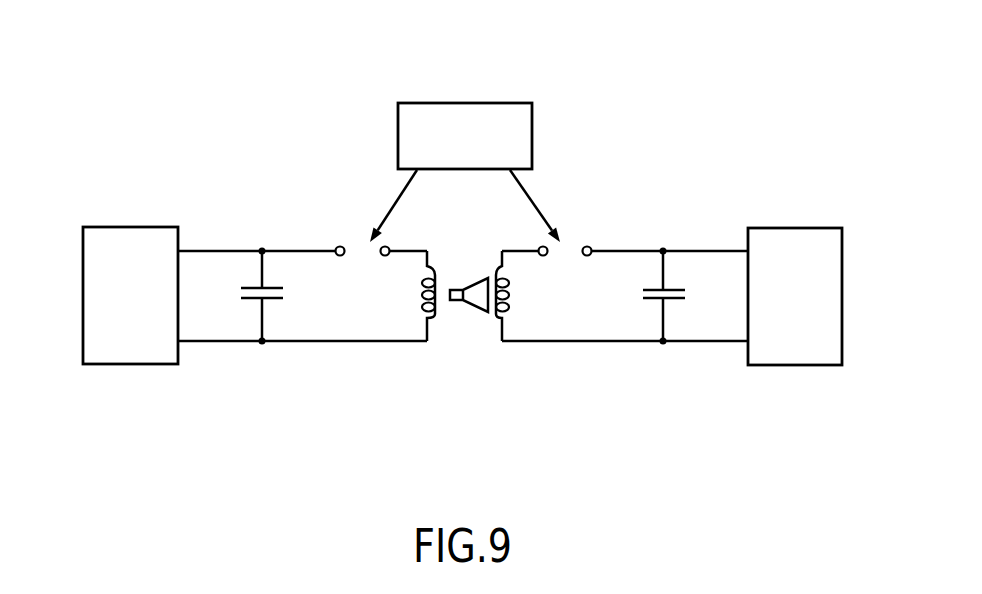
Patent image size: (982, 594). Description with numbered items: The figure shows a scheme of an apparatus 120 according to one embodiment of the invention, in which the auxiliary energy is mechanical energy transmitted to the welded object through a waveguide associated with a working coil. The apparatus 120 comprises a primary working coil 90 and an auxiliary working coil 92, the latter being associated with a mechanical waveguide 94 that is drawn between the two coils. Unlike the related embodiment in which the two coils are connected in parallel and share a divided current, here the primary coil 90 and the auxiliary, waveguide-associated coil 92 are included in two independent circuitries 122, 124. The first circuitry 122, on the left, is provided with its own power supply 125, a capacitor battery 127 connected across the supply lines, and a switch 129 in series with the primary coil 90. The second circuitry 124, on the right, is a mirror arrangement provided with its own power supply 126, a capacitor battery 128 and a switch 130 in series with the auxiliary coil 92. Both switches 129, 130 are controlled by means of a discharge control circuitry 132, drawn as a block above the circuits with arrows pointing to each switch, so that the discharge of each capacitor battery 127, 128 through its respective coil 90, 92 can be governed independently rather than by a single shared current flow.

The apparatus 120 is at (658, 128).
The independent circuitry 122 is at (345, 315).
The independent circuitry 124 is at (595, 322).
The power supply 125 is at (133, 230).
The power supply 126 is at (788, 229).
The capacitor battery 127 is at (253, 293).
The capacitor battery 128 is at (675, 300).
The switch 129 is at (360, 247).
The switch 130 is at (563, 248).
The discharge control circuitry 132 is at (443, 102).
The primary working coil 90 is at (433, 317).
The auxiliary working coil 92 is at (506, 307).
The mechanical waveguide 94 is at (472, 305).